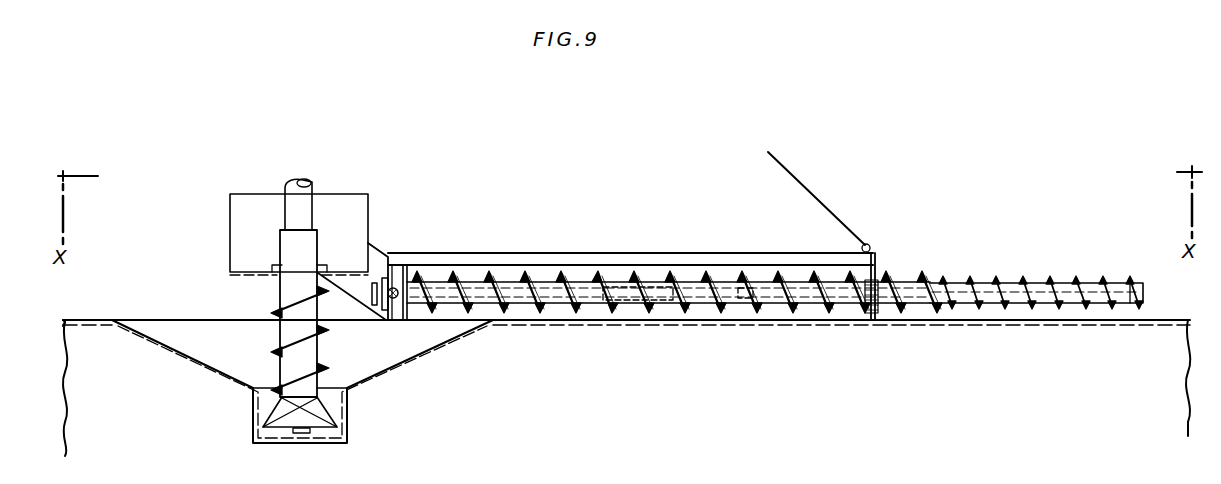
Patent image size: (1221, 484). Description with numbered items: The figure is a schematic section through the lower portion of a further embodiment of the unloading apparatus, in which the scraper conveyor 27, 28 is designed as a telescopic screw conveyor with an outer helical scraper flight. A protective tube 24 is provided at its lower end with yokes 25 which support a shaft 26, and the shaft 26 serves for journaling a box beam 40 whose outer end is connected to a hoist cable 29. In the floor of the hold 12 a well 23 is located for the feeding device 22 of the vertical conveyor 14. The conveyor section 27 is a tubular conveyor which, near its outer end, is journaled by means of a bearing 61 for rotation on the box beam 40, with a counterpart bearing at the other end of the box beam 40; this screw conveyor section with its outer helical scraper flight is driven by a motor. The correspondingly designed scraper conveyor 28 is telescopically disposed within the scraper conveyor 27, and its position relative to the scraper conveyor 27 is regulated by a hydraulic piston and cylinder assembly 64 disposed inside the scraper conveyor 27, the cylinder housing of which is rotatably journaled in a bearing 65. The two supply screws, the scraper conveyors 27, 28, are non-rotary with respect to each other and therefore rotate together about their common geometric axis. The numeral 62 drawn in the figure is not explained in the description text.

The hold 12 is at (84, 321).
The vertical conveyor 14 is at (298, 204).
The feeding device 22 is at (272, 330).
The well 23 is at (446, 350).
The protective tube 24 is at (230, 216).
The yokes 25 is at (386, 257).
The shaft 26 is at (397, 312).
The scraper conveyor 27 is at (540, 278).
The scraper conveyor 28 is at (985, 285).
The hoist cable 29 is at (832, 207).
The box beam 40 is at (672, 259).
The bearing 61 is at (877, 270).
The coupling 62 is at (697, 320).
The hydraulic piston and cylinder assembly 64 is at (595, 298).
The bearing 65 is at (363, 306).